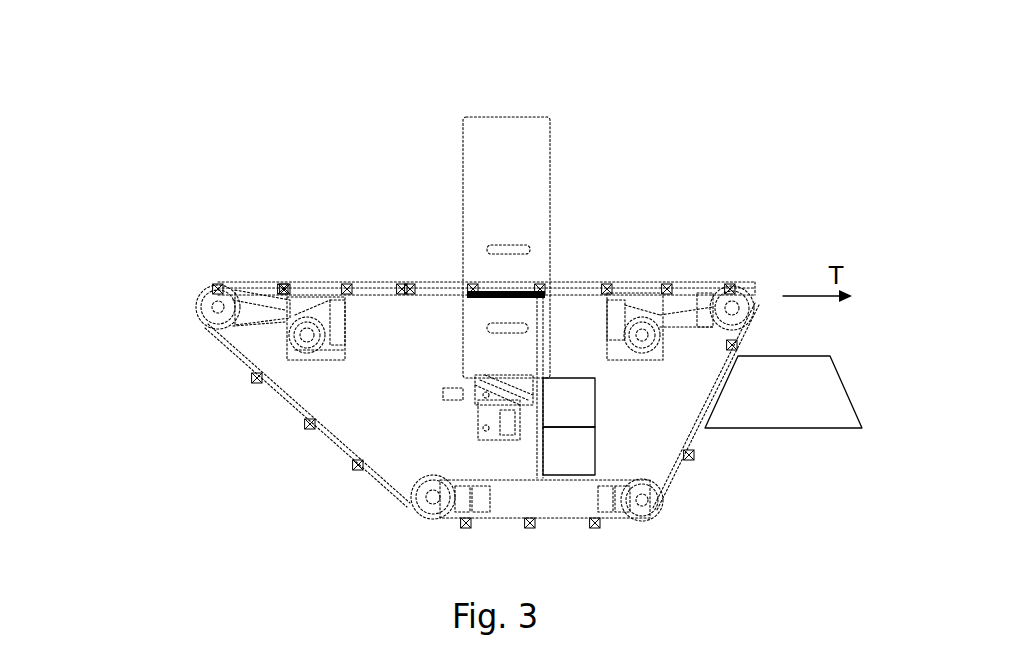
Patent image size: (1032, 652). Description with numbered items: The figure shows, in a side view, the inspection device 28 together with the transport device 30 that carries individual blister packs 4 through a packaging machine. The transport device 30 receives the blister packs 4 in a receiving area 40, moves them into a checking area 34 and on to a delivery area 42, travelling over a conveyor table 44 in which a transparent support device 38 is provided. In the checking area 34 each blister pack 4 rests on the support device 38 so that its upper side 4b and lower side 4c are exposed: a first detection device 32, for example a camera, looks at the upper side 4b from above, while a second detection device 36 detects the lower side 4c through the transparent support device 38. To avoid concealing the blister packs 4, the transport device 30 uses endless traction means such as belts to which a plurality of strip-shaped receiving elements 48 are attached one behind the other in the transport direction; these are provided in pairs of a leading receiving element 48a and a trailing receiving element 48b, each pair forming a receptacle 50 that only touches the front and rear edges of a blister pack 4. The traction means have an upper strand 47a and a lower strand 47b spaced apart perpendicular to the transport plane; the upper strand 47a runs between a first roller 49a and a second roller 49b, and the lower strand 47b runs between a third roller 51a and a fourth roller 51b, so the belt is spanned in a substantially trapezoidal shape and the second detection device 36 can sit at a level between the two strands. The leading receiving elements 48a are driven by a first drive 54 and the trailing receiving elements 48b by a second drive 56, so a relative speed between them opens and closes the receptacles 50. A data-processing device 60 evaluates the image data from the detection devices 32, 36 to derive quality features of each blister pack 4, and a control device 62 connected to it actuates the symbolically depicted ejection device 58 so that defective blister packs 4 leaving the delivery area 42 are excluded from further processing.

The blister pack 4 is at (480, 290).
The upper side 4b is at (247, 282).
The lower side 4c is at (252, 288).
The inspection device 28 is at (604, 155).
The transport device 30 is at (311, 519).
The detection device 32 is at (520, 137).
The checking area 34 is at (536, 272).
The second detection device 36 is at (527, 314).
The transparent support device 38 is at (503, 290).
The receiving area 40 is at (258, 268).
The delivery area 42 is at (703, 270).
The conveyor table 44 is at (287, 293).
The upper strand 47a is at (402, 288).
The lower strand 47b is at (565, 519).
The receiving elements 48 is at (357, 465).
The leading receiving element 48a is at (346, 288).
The trailing receiving element 48b is at (282, 288).
The first roller 49a is at (210, 304).
The second roller 49b is at (741, 307).
The receptacle 50 is at (316, 272).
The third roller 51a is at (435, 497).
The fourth roller 51b is at (641, 503).
The first drive 54 is at (308, 348).
The second drive 56 is at (653, 342).
The ejection device 58 is at (775, 420).
The data-processing device 60 is at (575, 409).
The control device 62 is at (575, 457).